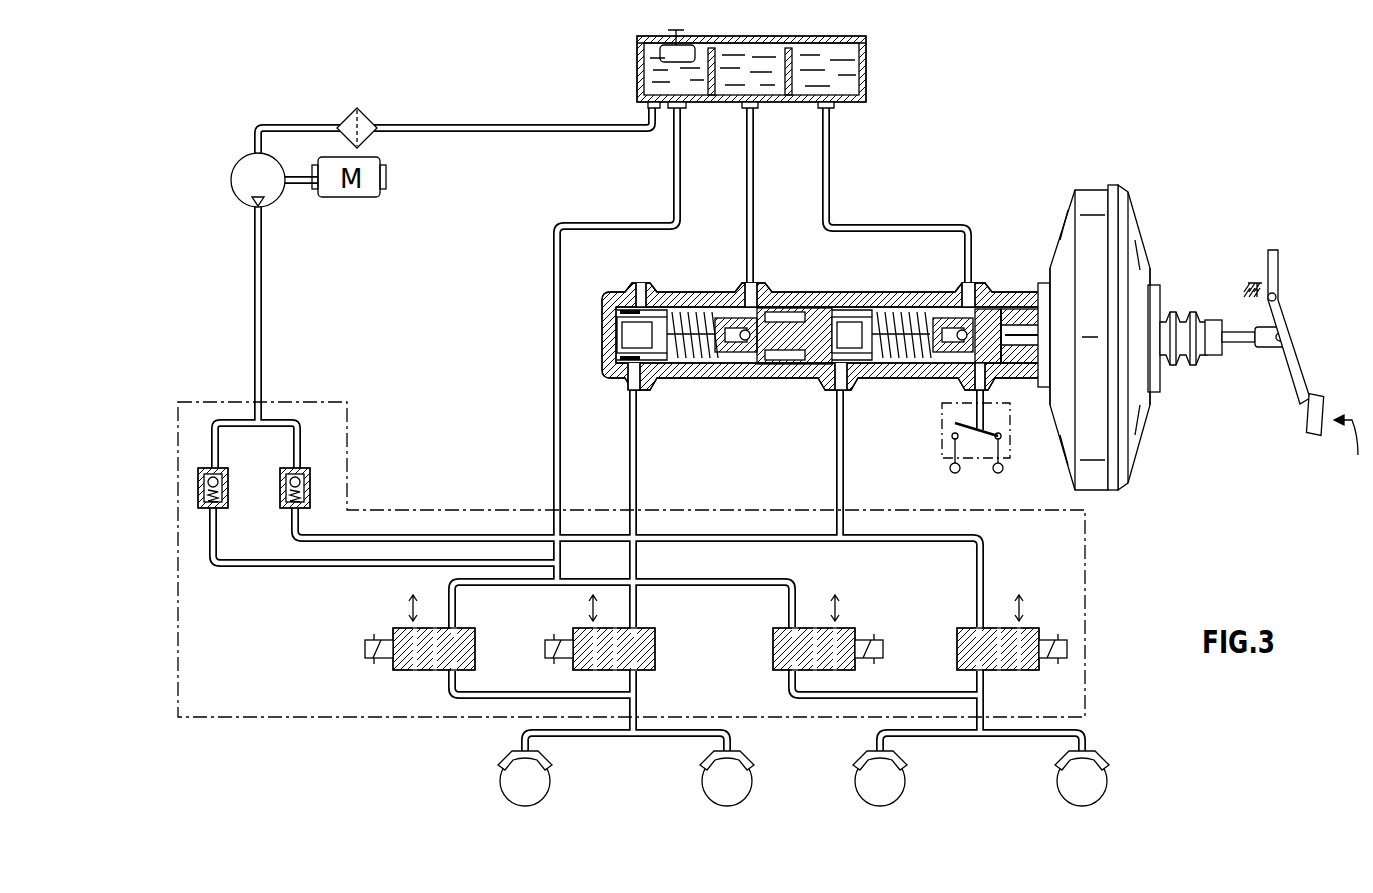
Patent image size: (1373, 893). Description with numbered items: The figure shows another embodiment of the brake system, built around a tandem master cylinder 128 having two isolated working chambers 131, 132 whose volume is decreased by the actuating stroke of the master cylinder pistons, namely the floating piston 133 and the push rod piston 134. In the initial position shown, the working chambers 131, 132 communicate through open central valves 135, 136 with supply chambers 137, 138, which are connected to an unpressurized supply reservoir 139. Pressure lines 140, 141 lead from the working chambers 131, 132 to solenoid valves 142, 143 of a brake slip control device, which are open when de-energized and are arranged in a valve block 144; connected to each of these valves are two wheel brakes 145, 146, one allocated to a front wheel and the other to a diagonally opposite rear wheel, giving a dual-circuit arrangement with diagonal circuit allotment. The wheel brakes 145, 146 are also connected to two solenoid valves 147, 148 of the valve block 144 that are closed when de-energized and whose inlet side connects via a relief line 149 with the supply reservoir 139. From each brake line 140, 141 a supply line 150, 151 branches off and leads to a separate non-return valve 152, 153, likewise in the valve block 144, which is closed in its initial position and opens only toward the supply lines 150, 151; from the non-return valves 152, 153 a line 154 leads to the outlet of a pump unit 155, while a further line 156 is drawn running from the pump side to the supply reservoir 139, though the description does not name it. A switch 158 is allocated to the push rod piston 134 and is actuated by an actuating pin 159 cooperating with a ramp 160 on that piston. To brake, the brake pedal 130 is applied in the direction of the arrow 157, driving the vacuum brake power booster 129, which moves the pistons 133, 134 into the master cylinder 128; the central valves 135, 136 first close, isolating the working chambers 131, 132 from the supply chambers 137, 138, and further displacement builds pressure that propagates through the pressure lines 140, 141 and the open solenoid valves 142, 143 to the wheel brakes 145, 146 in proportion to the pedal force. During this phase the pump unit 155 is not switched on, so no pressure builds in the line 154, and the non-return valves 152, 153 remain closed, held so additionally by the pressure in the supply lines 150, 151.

The tandem master cylinder 128 is at (828, 320).
The vacuum brake power booster 129 is at (1156, 226).
The brake pedal 130 is at (1294, 411).
The working chamber 131 is at (694, 302).
The working chamber 132 is at (900, 302).
The floating piston 133 is at (800, 352).
The push rod piston 134 is at (1016, 302).
The central valve 135 is at (749, 362).
The central valve 136 is at (955, 299).
The supply chamber 137 is at (783, 302).
The supply chamber 138 is at (990, 299).
The supply reservoir 139 is at (868, 66).
The pressure line 140 is at (638, 450).
The pressure line 141 is at (835, 450).
The solenoid valve 142 is at (655, 642).
The solenoid valve 143 is at (1010, 642).
The valve block 144 is at (1087, 575).
The wheel brake 145 is at (510, 783).
The wheel brake 146 is at (892, 783).
The solenoid valve 147 is at (472, 642).
The solenoid valve 148 is at (865, 642).
The relief line 149 is at (552, 449).
The supply line 150 is at (393, 568).
The supply line 151 is at (662, 544).
The non-return valve 152 is at (225, 478).
The non-return valve 153 is at (283, 500).
The line 154 is at (254, 270).
The pump unit 155 is at (246, 169).
The suction line 156 is at (525, 126).
The arrow 157 is at (1353, 447).
The switch 158 is at (942, 437).
The actuating pin 159 is at (973, 400).
The ramp 160 is at (1014, 385).